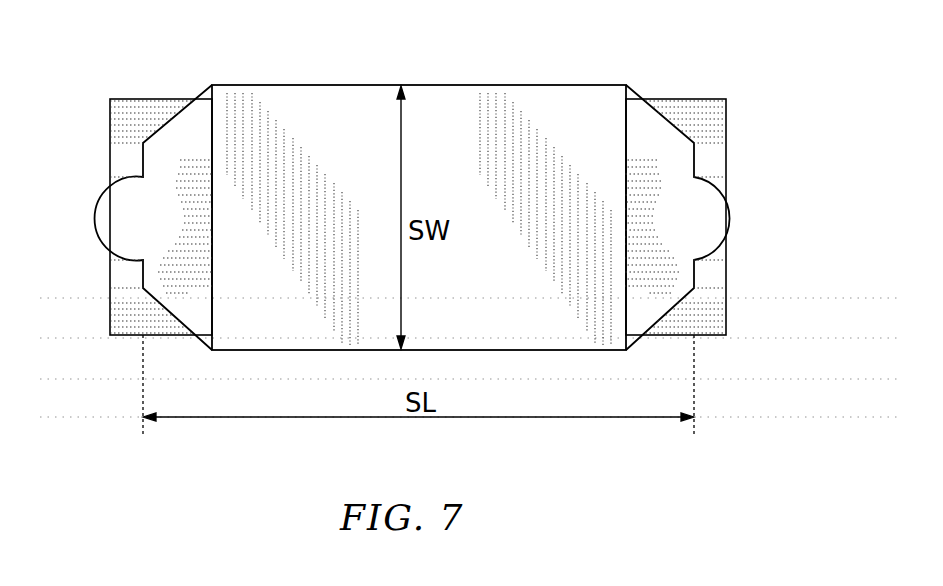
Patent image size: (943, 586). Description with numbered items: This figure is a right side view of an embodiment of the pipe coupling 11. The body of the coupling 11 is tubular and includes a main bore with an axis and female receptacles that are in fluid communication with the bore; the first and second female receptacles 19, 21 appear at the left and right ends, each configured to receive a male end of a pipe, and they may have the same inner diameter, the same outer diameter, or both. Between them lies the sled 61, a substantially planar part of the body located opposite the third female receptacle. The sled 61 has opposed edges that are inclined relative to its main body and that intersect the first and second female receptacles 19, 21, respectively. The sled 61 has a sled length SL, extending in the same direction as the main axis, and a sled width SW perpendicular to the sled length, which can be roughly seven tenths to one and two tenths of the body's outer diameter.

The pipe coupling 11 is at (753, 40).
The first female receptacle 19 is at (110, 302).
The second female receptacle 21 is at (726, 298).
The sled 61 is at (522, 110).